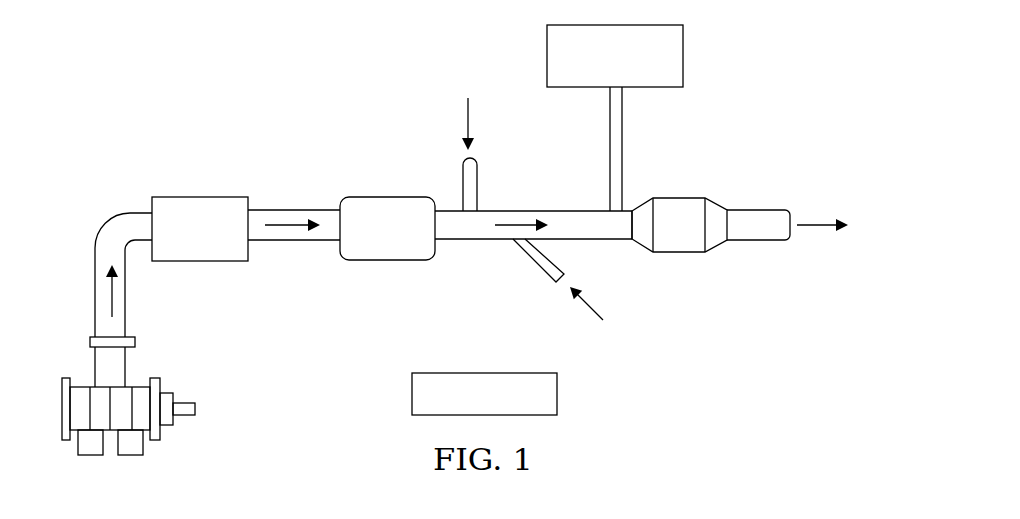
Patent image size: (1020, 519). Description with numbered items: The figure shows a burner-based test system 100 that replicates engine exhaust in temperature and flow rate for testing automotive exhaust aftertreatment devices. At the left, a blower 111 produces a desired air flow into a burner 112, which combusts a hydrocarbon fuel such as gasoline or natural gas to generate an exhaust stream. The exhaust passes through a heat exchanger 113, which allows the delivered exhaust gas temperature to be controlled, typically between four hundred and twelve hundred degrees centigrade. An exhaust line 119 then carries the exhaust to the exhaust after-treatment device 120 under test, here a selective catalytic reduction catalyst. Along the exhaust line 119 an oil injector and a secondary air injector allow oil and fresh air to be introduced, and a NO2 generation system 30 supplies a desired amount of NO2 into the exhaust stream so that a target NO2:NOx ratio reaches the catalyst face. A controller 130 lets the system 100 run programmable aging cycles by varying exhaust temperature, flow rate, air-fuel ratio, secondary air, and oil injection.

The burner-based test system 100 is at (302, 70).
The blower 111 is at (163, 435).
The burner 112 is at (200, 192).
The heat exchanger 113 is at (387, 260).
The exhaust line 119 is at (547, 211).
The exhaust after-treatment device 120 is at (678, 198).
The NO2 generation system 30 is at (683, 57).
The controller 130 is at (557, 393).